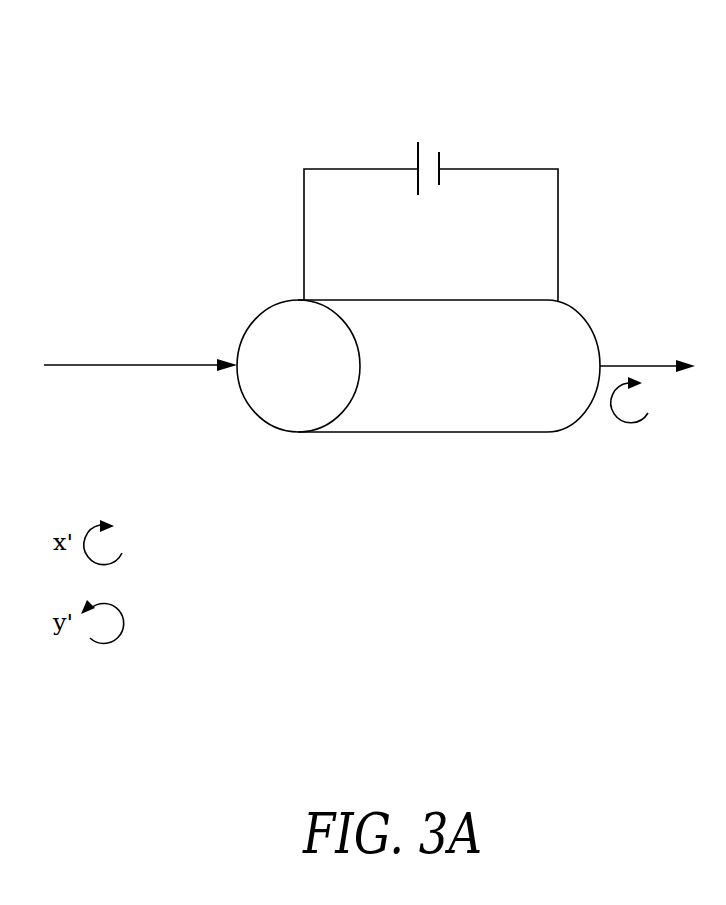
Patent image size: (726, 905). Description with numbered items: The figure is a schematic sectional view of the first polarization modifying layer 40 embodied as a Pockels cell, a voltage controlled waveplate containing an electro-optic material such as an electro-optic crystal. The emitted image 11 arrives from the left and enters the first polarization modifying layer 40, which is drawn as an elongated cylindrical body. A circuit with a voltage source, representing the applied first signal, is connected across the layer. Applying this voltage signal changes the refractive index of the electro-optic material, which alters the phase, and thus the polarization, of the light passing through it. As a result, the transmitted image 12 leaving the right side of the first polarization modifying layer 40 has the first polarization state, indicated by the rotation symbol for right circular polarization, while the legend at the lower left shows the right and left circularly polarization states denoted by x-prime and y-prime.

The first polarization modifying layer 40 is at (232, 102).
The emitted image 11 is at (157, 365).
The transmitted image 12 is at (640, 365).